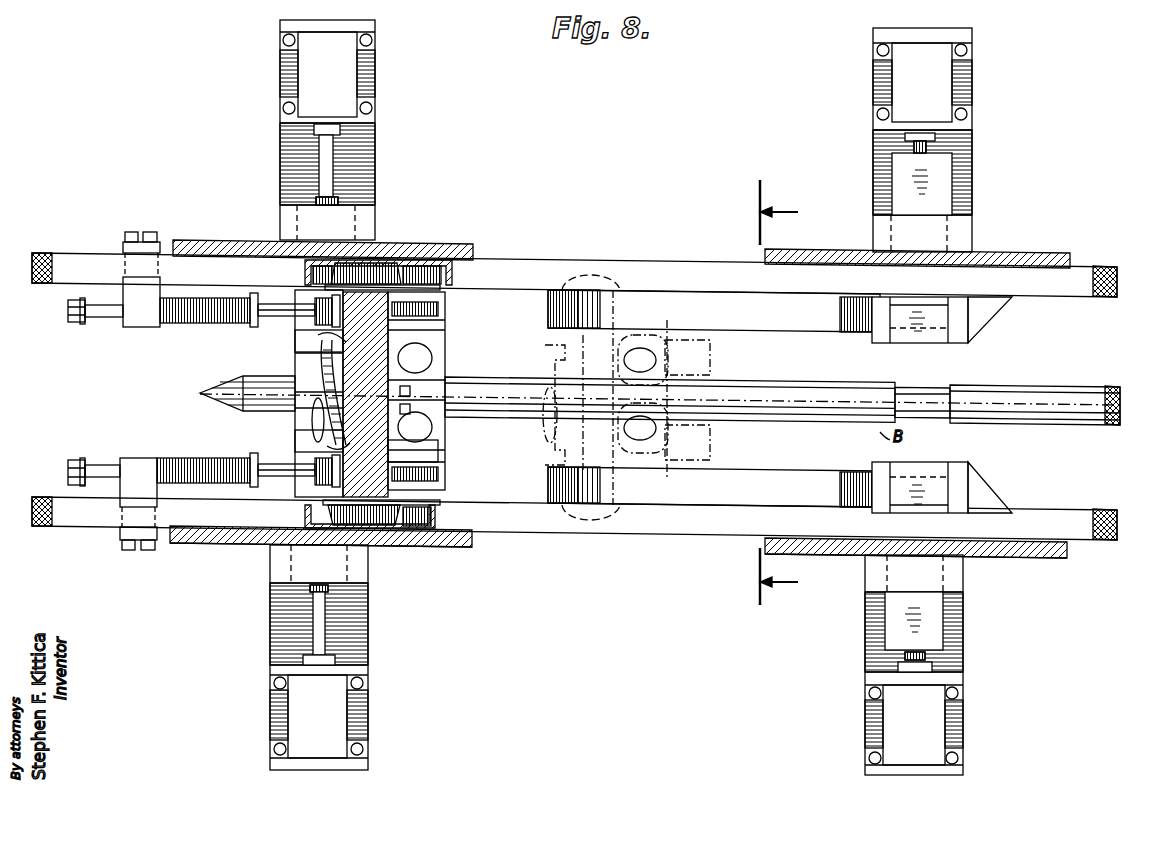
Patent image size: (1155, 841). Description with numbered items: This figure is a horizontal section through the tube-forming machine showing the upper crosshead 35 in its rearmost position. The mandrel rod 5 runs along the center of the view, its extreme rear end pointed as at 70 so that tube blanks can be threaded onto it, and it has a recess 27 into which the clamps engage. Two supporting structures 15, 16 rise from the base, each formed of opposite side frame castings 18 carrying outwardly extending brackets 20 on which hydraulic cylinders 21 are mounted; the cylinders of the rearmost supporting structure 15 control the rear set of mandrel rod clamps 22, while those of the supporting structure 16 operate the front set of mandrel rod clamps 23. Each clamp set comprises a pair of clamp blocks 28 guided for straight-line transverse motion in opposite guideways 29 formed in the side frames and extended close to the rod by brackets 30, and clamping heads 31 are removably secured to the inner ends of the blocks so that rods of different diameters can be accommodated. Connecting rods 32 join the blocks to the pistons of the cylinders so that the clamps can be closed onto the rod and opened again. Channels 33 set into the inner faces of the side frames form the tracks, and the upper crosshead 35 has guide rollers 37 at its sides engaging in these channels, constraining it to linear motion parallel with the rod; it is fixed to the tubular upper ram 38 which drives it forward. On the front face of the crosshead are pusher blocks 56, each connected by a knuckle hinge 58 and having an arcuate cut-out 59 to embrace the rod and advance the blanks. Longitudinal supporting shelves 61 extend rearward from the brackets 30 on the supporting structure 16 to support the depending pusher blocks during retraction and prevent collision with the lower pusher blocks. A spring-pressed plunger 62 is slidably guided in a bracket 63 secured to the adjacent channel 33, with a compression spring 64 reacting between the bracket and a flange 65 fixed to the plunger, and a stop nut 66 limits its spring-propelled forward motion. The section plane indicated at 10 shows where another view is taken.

The mandrel rod 5 is at (660, 393).
The section line 10 is at (797, 392).
The rearmost supporting structure 15 is at (197, 548).
The supporting structure 16 is at (1027, 556).
The side frame castings 18 is at (455, 243).
The brackets 20 is at (277, 110).
The hydraulic cylinders 21 is at (313, 70).
The rear set of mandrel rod clamps 22 is at (292, 365).
The front set of mandrel rod clamps 23 is at (949, 379).
The recess 27 is at (935, 386).
The clamp blocks 28 is at (902, 170).
The guideways 29 is at (947, 268).
The brackets 30 is at (963, 322).
The clamping heads 31 is at (905, 337).
The connecting rods 32 is at (376, 165).
The channels 33 is at (86, 257).
The upper crosshead 35 is at (438, 447).
The guide rollers 37 is at (372, 272).
The upper tubular ram 38 is at (312, 437).
The pusher blocks 56 is at (443, 391).
The knuckle hinge 58 is at (425, 360).
The arcuate cut-out 59 is at (432, 400).
The longitudinal supporting shelves 61 is at (783, 318).
The spring-pressed plunger 62 is at (414, 404).
The bracket 63 is at (139, 328).
The compression spring 64 is at (175, 325).
The flange 65 is at (257, 293).
The stop nut 66 is at (66, 310).
The pointed rear end 70 is at (200, 393).